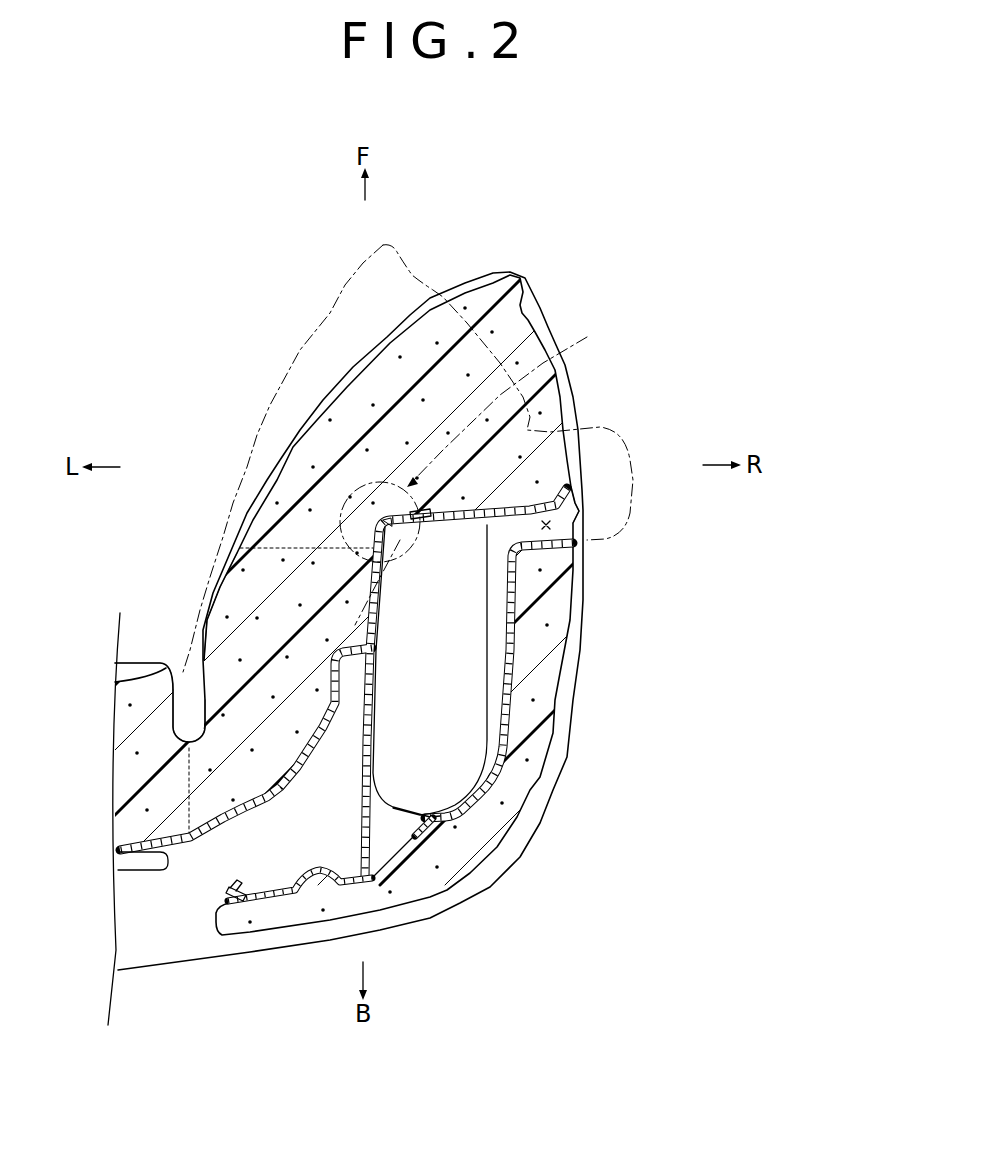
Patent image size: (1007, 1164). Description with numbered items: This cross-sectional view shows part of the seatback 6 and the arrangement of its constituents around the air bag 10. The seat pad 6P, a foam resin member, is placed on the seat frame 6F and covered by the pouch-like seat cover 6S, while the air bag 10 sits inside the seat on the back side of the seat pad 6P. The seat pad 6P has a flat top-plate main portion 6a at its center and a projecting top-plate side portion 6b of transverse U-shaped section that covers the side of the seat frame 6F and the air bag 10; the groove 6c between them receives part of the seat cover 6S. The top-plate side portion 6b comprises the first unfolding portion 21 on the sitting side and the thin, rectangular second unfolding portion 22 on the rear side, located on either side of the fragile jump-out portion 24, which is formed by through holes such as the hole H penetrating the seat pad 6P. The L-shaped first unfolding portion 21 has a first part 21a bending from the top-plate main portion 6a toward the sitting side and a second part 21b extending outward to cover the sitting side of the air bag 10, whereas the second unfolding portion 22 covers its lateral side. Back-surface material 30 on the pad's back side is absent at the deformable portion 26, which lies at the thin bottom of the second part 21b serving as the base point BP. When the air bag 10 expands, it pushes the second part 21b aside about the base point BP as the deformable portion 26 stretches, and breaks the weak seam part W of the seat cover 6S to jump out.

The seatback 6 is at (568, 237).
The seat cover 6S is at (460, 284).
The seat pad 6P is at (503, 605).
The seat frame 6F is at (282, 880).
The top-plate main portion 6a is at (152, 690).
The top-plate side portion 6b is at (718, 503).
The groove 6c is at (186, 718).
The air bag 10 is at (507, 716).
The first unfolding portion 21 is at (170, 410).
The first part 21a is at (242, 595).
The second part 21b is at (327, 445).
The second unfolding portion 22 is at (557, 562).
The jump-out portion 24 is at (632, 519).
The deformable portion 26 is at (392, 528).
The back-surface material 30 is at (438, 518).
The base point BP is at (491, 473).
The hole H is at (550, 526).
The seam part W is at (580, 512).